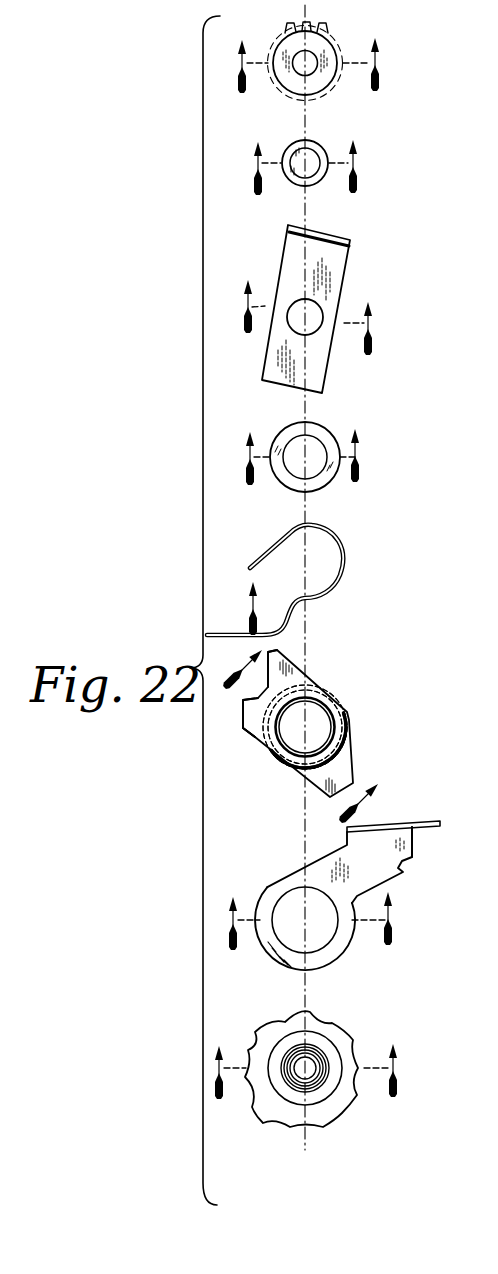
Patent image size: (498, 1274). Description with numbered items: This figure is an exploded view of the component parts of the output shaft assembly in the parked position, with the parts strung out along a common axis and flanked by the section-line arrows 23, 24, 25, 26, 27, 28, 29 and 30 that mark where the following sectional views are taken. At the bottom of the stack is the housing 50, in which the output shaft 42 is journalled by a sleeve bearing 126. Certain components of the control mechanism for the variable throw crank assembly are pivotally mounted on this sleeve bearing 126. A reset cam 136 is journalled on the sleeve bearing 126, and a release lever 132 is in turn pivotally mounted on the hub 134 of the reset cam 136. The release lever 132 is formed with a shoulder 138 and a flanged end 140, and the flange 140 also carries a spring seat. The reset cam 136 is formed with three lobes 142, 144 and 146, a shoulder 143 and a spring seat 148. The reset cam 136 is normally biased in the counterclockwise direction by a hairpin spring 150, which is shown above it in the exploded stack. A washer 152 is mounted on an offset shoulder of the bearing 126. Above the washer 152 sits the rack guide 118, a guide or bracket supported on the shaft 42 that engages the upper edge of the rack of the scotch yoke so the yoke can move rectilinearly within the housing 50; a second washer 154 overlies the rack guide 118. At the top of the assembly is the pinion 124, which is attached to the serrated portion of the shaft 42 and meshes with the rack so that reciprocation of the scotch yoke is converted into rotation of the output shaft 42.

The pinion 124 is at (340, 42).
The section line 23 is at (307, 77).
The washer 154 is at (318, 147).
The section line 24 is at (307, 178).
The rack guide 118 is at (341, 257).
The section line 25 is at (297, 330).
The washer 152 is at (330, 433).
The section line 26 is at (304, 470).
The hairpin spring 150 is at (343, 560).
The section line 27 is at (237, 608).
The lobe 144 is at (287, 653).
The reset cam 136 is at (320, 692).
The hub 134 is at (335, 697).
The shoulder 143 is at (349, 718).
The lobe 146 is at (348, 765).
The lobe 142 is at (247, 715).
The spring seat 148 is at (257, 737).
The section line 28 is at (295, 735).
The flanged end 140 is at (428, 820).
The release lever 132 is at (465, 853).
The shoulder 138 is at (404, 868).
The section line 29 is at (309, 934).
The sleeve bearing 126 is at (313, 1045).
The housing 50 is at (353, 1042).
The output shaft 42 is at (310, 1082).
The section line 30 is at (311, 1089).